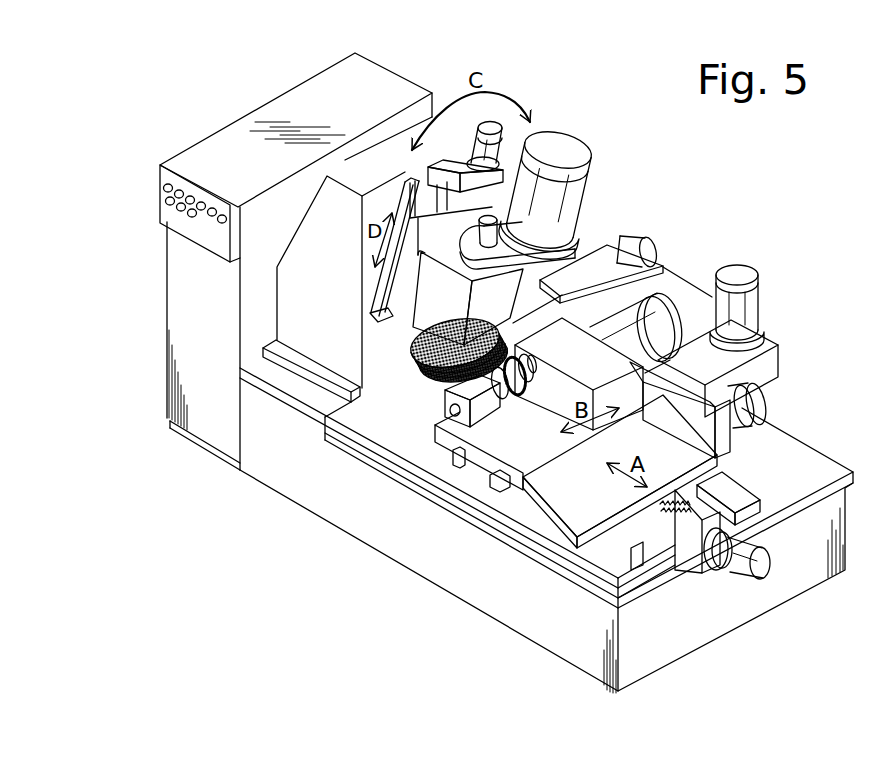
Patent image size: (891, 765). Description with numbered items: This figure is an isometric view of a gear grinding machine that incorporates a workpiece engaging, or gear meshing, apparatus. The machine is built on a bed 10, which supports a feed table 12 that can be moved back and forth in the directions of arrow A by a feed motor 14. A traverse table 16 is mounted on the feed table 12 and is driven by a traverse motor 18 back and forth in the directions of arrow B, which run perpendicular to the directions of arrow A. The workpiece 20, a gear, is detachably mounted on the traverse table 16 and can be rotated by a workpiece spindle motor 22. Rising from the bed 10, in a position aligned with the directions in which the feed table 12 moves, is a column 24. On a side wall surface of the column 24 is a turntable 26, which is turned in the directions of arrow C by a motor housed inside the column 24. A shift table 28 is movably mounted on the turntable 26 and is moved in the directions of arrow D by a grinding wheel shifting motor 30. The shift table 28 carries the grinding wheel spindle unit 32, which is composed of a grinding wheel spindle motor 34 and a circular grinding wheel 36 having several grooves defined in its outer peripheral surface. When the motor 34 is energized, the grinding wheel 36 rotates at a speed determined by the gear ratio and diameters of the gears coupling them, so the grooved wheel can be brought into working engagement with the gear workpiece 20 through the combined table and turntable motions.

The bed 10 is at (572, 637).
The feed table 12 is at (540, 523).
The feed motor 14 is at (727, 556).
The traverse table 16 is at (512, 408).
The traverse motor 18 is at (767, 405).
The workpiece 20 is at (476, 468).
The workpiece spindle motor 22 is at (645, 313).
The column 24 is at (293, 283).
The turntable 26 is at (408, 194).
The shift table 28 is at (385, 305).
The grinding wheel shifting motor 30 is at (500, 150).
The grinding wheel spindle unit 32 is at (500, 300).
The grinding wheel spindle motor 34 is at (573, 148).
The grinding wheel 36 is at (433, 380).